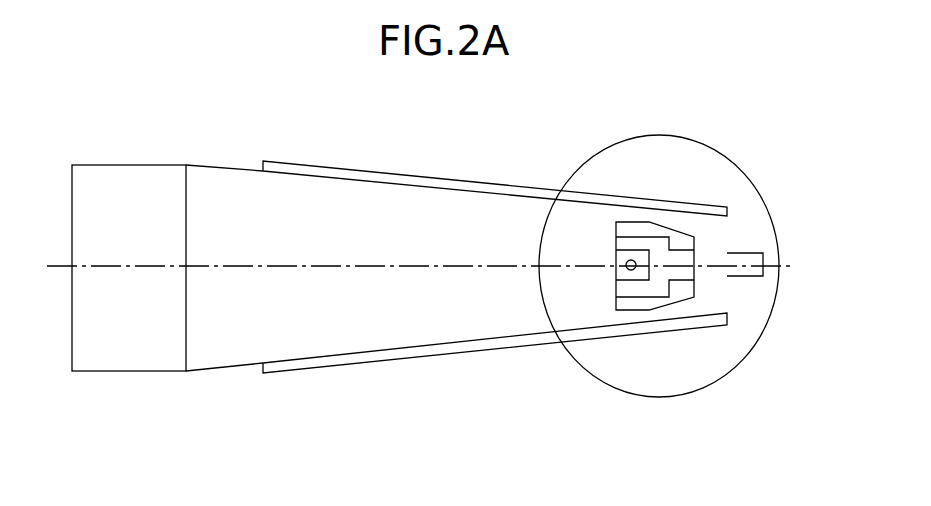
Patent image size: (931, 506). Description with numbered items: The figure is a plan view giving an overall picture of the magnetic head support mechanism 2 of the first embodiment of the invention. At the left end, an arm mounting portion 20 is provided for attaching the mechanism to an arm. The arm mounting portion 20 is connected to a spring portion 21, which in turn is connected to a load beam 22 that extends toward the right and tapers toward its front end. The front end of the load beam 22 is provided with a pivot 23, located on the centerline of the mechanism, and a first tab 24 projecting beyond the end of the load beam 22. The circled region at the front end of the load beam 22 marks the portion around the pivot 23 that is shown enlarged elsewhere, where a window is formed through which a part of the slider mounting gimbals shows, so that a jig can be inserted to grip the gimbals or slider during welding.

The magnetic head support mechanism 2 is at (252, 157).
The arm mounting portion 20 is at (155, 362).
The spring portion 21 is at (212, 350).
The load beam 22 is at (332, 340).
The pivot 23 is at (627, 263).
The first tab 24 is at (752, 273).